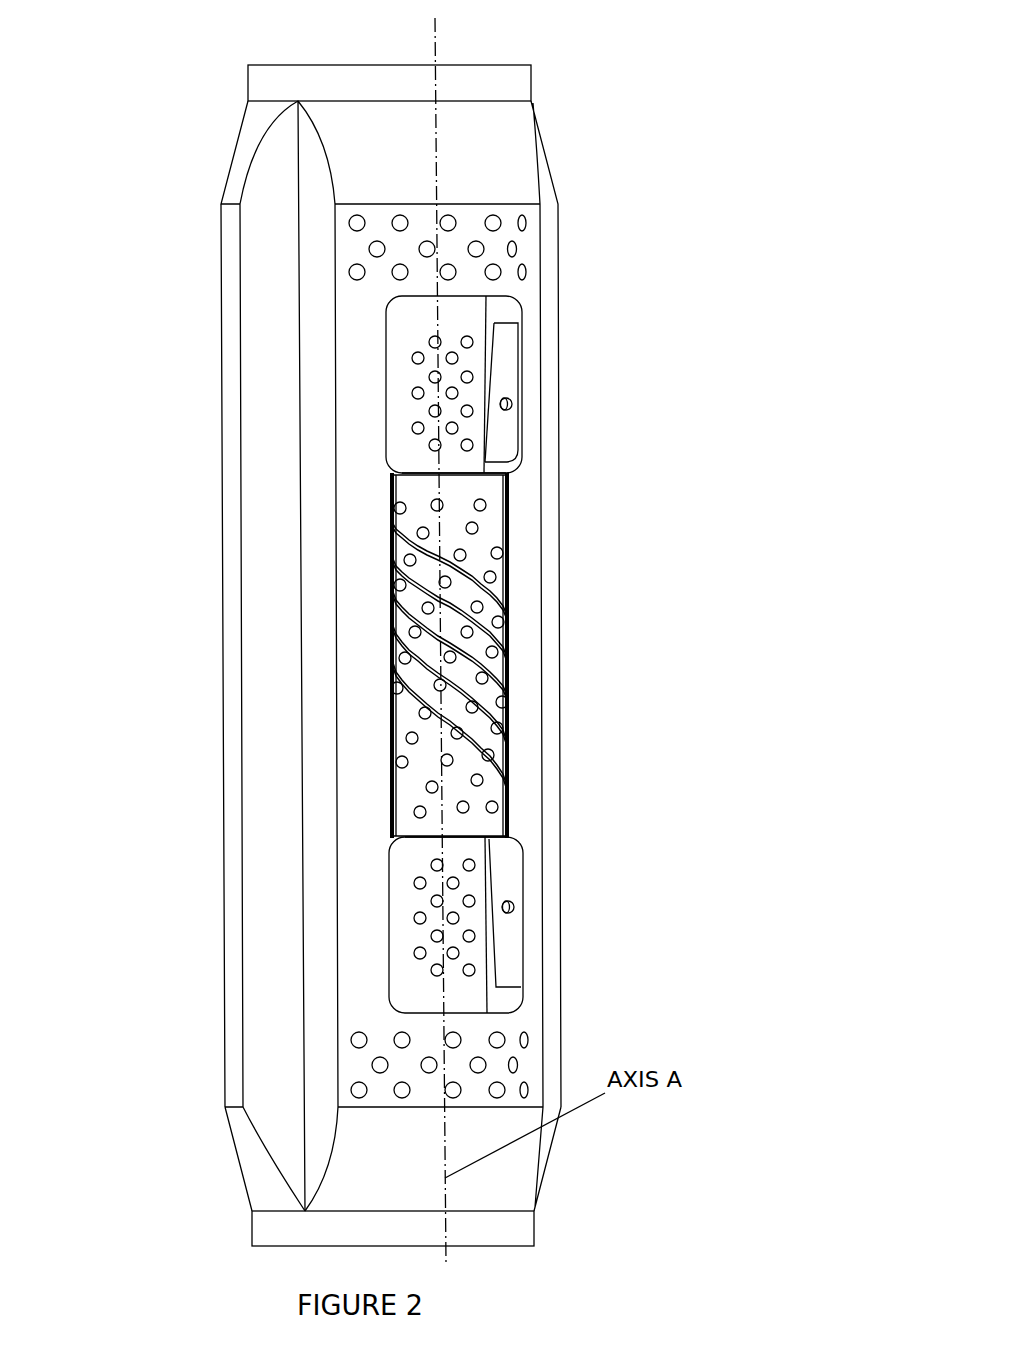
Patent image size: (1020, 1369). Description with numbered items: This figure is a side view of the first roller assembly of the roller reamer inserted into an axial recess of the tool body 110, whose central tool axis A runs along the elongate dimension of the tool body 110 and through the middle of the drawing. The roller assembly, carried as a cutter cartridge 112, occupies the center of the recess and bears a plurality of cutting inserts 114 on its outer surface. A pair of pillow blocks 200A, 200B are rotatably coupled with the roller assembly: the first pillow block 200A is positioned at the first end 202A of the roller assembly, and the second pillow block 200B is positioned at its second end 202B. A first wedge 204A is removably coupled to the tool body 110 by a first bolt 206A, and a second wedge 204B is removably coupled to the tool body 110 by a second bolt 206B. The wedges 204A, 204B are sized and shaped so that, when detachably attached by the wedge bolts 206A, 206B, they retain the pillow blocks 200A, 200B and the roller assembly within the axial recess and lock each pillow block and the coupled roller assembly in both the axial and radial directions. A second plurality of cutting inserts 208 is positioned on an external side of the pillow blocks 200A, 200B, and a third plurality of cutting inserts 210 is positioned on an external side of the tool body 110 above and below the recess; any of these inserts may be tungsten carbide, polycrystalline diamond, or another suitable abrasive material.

The tool body 110 is at (228, 180).
The cutter cartridge 112 is at (690, 571).
The plurality of cutting inserts 114 is at (415, 808).
The first pillow block 200A is at (389, 393).
The second pillow block 200B is at (392, 892).
The first end 202A is at (411, 467).
The second end 202B is at (408, 840).
The first wedge 204A is at (518, 371).
The second wedge 204B is at (520, 847).
The first bolt 206A is at (512, 407).
The second bolt 206B is at (510, 897).
The second plurality of cutting inserts 208 is at (410, 351).
The third plurality of cutting inserts 210 is at (523, 224).